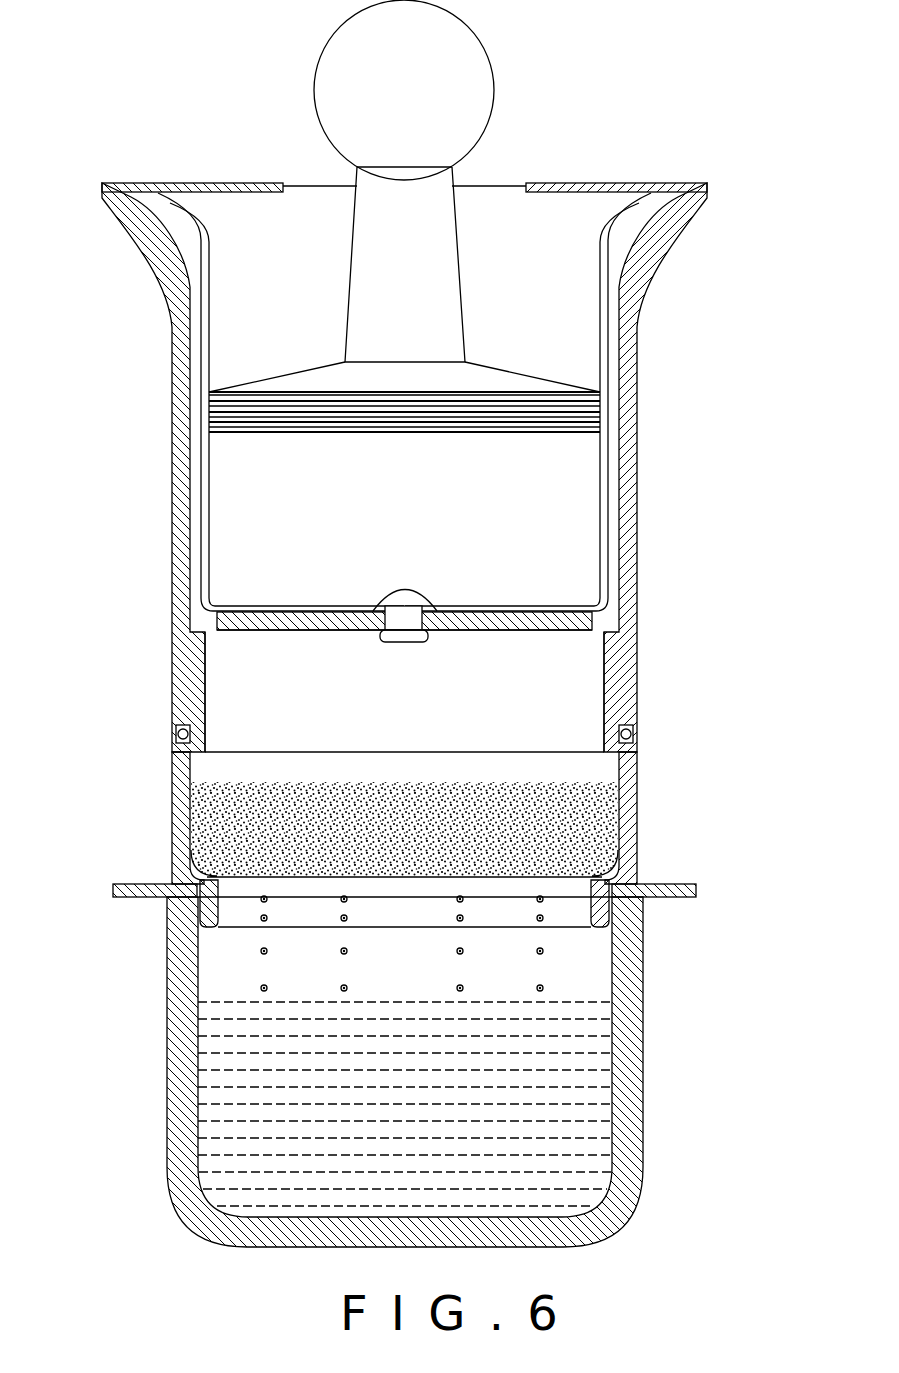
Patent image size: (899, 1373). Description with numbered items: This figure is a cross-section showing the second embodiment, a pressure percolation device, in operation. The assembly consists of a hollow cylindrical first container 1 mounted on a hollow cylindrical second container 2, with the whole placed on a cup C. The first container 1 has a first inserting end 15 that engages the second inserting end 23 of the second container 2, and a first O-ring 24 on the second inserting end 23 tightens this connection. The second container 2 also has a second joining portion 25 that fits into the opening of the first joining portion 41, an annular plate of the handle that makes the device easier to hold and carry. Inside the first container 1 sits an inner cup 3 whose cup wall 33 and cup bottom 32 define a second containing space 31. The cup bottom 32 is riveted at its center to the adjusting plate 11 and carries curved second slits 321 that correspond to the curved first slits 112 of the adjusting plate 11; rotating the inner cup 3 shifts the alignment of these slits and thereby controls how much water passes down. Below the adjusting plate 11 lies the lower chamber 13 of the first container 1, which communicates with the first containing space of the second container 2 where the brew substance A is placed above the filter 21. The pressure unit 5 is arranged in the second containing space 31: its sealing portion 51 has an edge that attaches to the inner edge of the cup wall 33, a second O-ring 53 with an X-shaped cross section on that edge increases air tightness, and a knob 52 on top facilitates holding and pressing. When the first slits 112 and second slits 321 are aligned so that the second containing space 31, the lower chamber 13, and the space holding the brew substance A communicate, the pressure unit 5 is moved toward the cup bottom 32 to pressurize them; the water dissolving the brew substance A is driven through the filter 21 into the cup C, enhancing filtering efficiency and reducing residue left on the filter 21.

The first container 1 is at (182, 350).
The second container 2 is at (394, 816).
The inner cup 3 is at (140, 185).
The pressure unit 5 is at (361, 221).
The adjusting plate 11 is at (233, 625).
The first slits 112 is at (267, 628).
The lower chamber 13 is at (225, 712).
The first inserting end 15 is at (622, 722).
The filter 21 is at (600, 856).
The second inserting end 23 is at (630, 778).
The first O-ring 24 is at (174, 741).
The second joining portion 25 is at (205, 923).
The second containing space 31 is at (225, 222).
The cup bottom 32 is at (330, 564).
The second slits 321 is at (260, 610).
The cup wall 33 is at (209, 413).
The first joining portion 41 is at (670, 897).
The sealing portion 51 is at (413, 230).
The knob 52 is at (467, 85).
The second O-ring 53 is at (361, 280).
The brew substance A is at (600, 830).
The cup C is at (638, 1058).